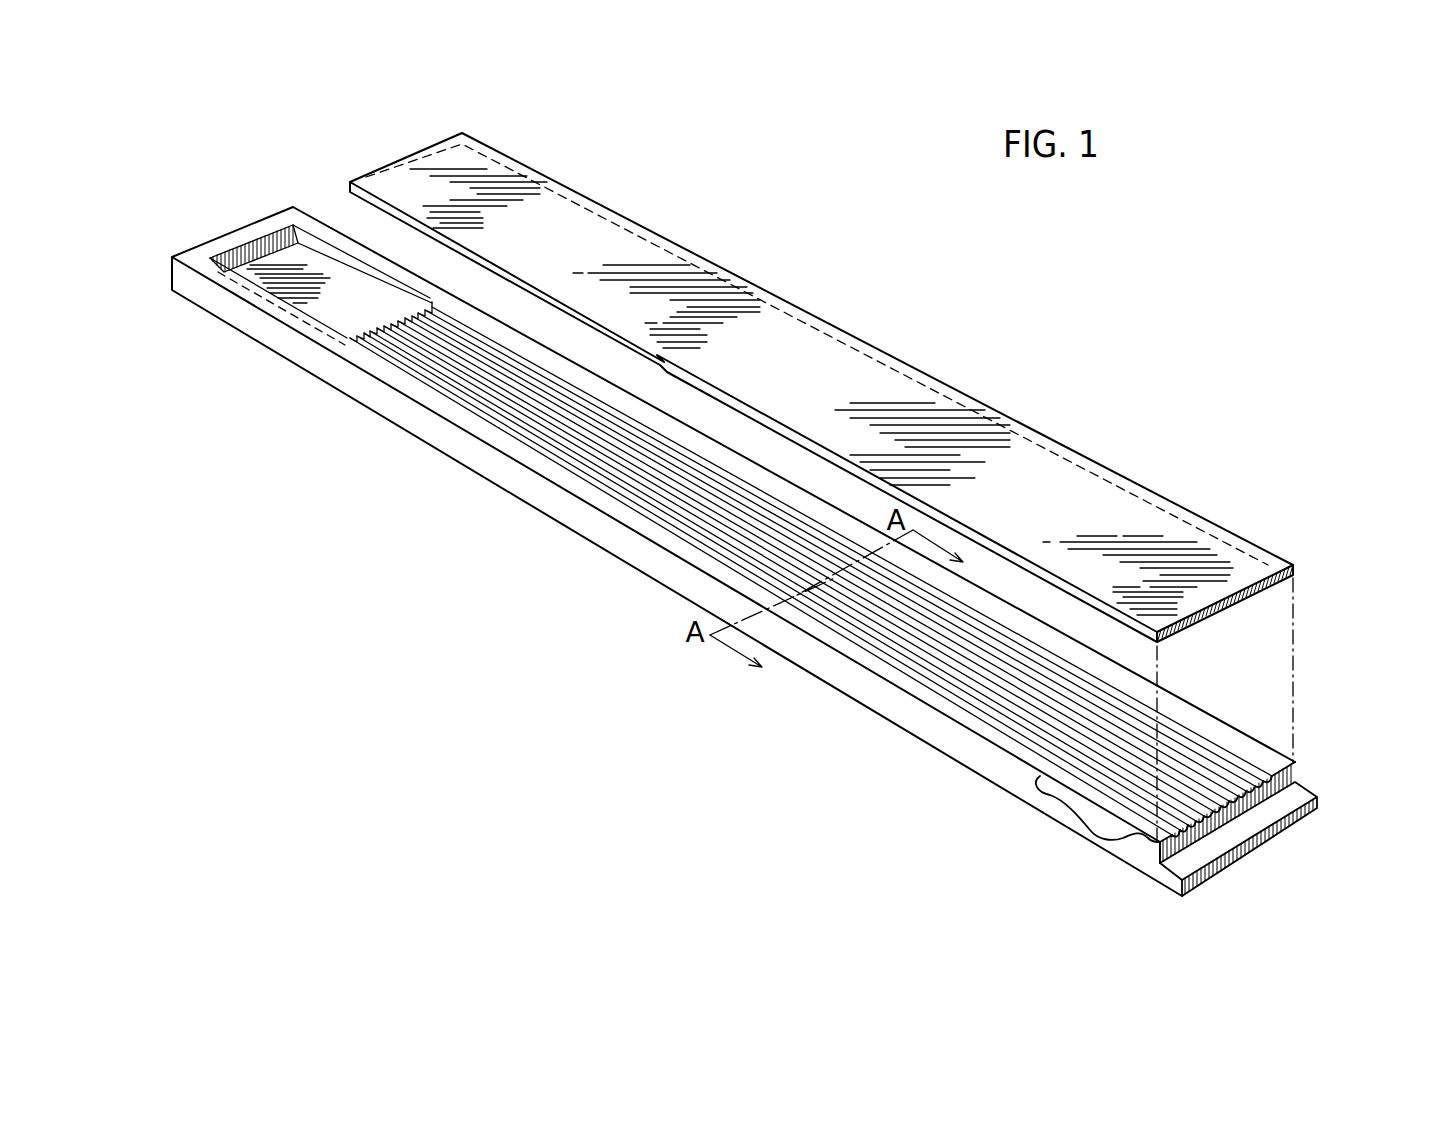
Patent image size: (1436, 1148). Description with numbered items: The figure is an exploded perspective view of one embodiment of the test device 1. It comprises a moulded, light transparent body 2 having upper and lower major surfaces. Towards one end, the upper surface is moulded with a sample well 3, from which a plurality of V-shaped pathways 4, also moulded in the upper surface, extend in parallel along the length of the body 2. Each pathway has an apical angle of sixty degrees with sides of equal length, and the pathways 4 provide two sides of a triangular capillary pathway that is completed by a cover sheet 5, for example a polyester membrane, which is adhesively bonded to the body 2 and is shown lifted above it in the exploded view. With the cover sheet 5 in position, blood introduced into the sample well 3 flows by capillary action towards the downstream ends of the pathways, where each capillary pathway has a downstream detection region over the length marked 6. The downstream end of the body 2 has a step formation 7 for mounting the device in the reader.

The test device 1 is at (823, 283).
The body 2 is at (575, 523).
The sample well 3 is at (287, 273).
The V-shaped pathways 4 is at (1300, 793).
The cover sheet 5 is at (1263, 565).
The detection region 6 is at (1070, 813).
The step formation 7 is at (1168, 883).